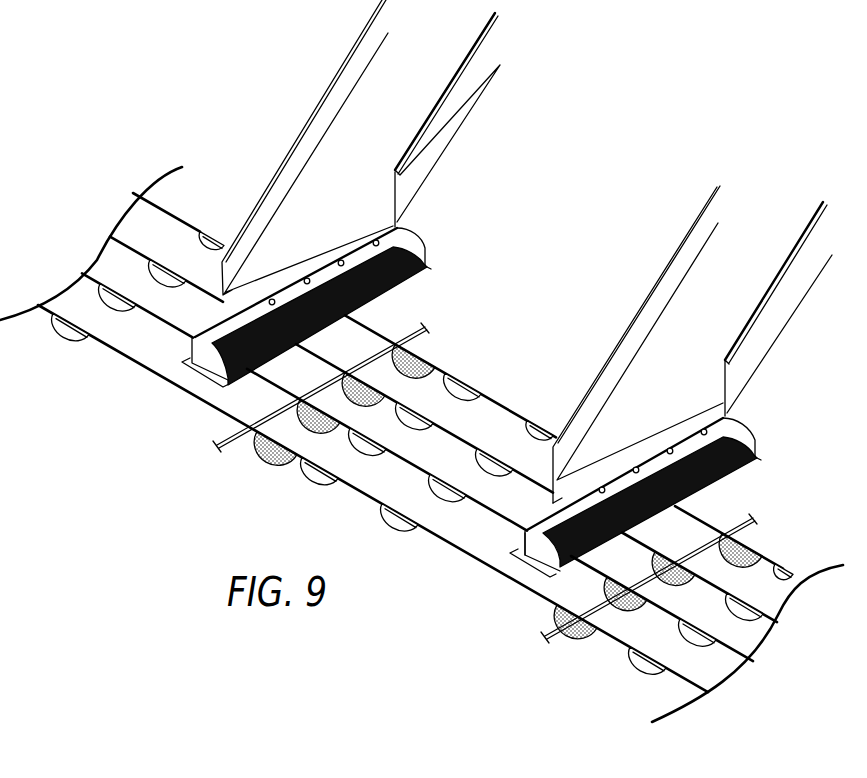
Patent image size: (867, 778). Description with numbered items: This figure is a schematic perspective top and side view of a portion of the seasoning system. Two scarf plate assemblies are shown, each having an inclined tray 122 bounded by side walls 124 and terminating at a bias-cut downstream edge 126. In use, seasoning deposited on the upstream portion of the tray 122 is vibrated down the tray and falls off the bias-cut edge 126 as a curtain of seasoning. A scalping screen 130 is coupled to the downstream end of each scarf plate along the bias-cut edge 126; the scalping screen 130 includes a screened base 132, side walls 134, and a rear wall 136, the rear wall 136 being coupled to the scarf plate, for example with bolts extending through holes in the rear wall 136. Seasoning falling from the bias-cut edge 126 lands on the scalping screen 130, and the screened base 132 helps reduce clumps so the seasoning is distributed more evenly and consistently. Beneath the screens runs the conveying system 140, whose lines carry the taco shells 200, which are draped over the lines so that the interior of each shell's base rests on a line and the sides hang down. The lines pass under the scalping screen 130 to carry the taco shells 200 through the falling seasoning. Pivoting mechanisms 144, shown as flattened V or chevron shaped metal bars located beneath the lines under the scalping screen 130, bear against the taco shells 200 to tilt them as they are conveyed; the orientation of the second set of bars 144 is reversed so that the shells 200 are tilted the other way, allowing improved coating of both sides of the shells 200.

The inclined tray 122 is at (682, 317).
The side walls 124 is at (607, 382).
The bias-cut downstream edge 126 is at (707, 410).
The scalping screen 130 is at (500, 536).
The screened base 132 is at (750, 465).
The side walls 134 is at (753, 447).
The rear wall 136 is at (712, 425).
The conveying system 140 is at (522, 393).
The pivoting mechanisms 144 is at (383, 332).
The taco shells 200 is at (645, 666).